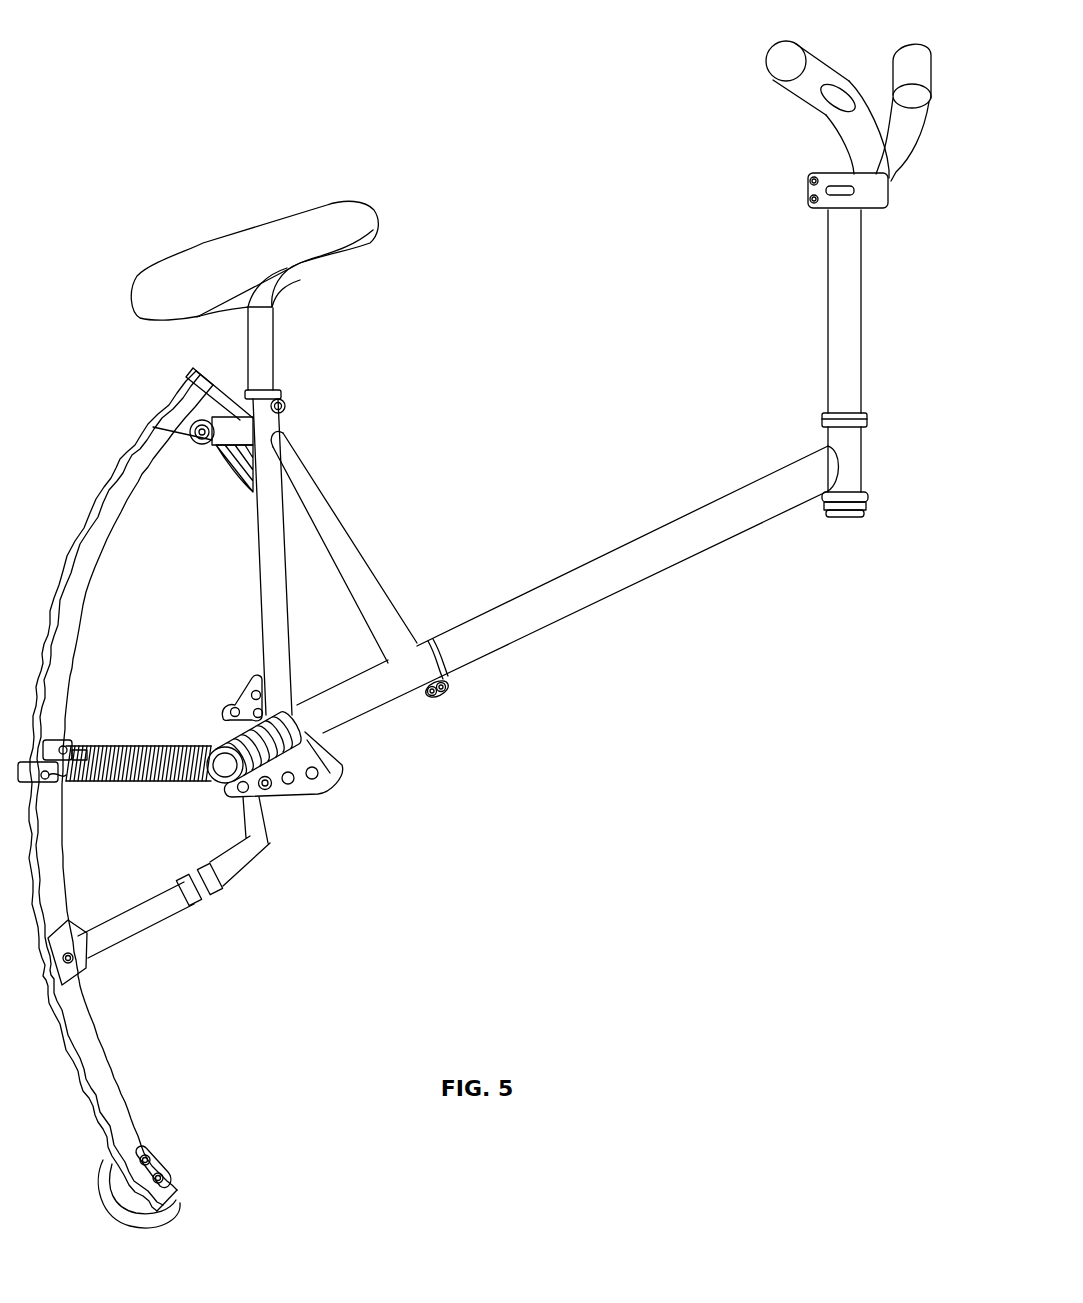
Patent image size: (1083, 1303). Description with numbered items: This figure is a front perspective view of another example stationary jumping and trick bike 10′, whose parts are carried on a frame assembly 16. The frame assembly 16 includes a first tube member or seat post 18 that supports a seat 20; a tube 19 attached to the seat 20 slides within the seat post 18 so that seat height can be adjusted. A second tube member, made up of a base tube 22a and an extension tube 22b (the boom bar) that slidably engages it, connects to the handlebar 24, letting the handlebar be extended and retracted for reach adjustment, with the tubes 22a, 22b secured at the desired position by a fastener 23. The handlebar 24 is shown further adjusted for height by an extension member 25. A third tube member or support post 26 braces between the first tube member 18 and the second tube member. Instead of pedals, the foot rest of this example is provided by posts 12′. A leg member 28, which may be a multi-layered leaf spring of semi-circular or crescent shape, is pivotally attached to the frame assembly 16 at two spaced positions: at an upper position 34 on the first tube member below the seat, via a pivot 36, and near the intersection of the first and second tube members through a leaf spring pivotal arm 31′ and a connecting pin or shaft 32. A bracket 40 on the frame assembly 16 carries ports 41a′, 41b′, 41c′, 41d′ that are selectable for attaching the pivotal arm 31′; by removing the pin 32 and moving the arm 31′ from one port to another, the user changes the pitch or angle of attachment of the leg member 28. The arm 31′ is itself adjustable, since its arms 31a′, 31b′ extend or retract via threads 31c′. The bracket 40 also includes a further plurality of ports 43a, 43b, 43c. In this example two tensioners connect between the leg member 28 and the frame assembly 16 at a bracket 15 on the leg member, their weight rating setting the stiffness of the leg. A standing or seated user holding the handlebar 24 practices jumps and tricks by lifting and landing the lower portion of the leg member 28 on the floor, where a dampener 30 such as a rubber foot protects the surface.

The stationary jumping and trick bike 10′ is at (488, 80).
The posts 12′ is at (222, 746).
The bracket 15 is at (42, 793).
The frame assembly 16 is at (458, 618).
The first tube member or seat post 18 is at (289, 583).
The tube 19 is at (274, 347).
The seat 20 is at (277, 221).
The base tube 22a is at (383, 706).
The extension tube 22b is at (641, 580).
The fastener 23 is at (446, 697).
The handlebar 24 is at (826, 131).
The extension member 25 is at (827, 310).
The third tube member or support post 26 is at (352, 522).
The leg member 28 is at (49, 580).
The dampener 30 is at (110, 1210).
The leaf spring pivotal arm 31′ is at (159, 897).
The arm 31a′ is at (125, 914).
The arm 31b′ is at (222, 845).
The threads 31c′ is at (192, 874).
The pin or shaft 32 is at (266, 790).
The upper position 34 is at (236, 410).
The pivot 36 is at (203, 444).
The bracket 40 is at (296, 797).
The port 41a′ is at (246, 795).
The port 41b′ is at (267, 792).
The port 41c′ is at (292, 785).
The port 41d′ is at (318, 780).
The port 43a is at (234, 707).
The port 43b is at (255, 690).
The port 43c is at (262, 709).